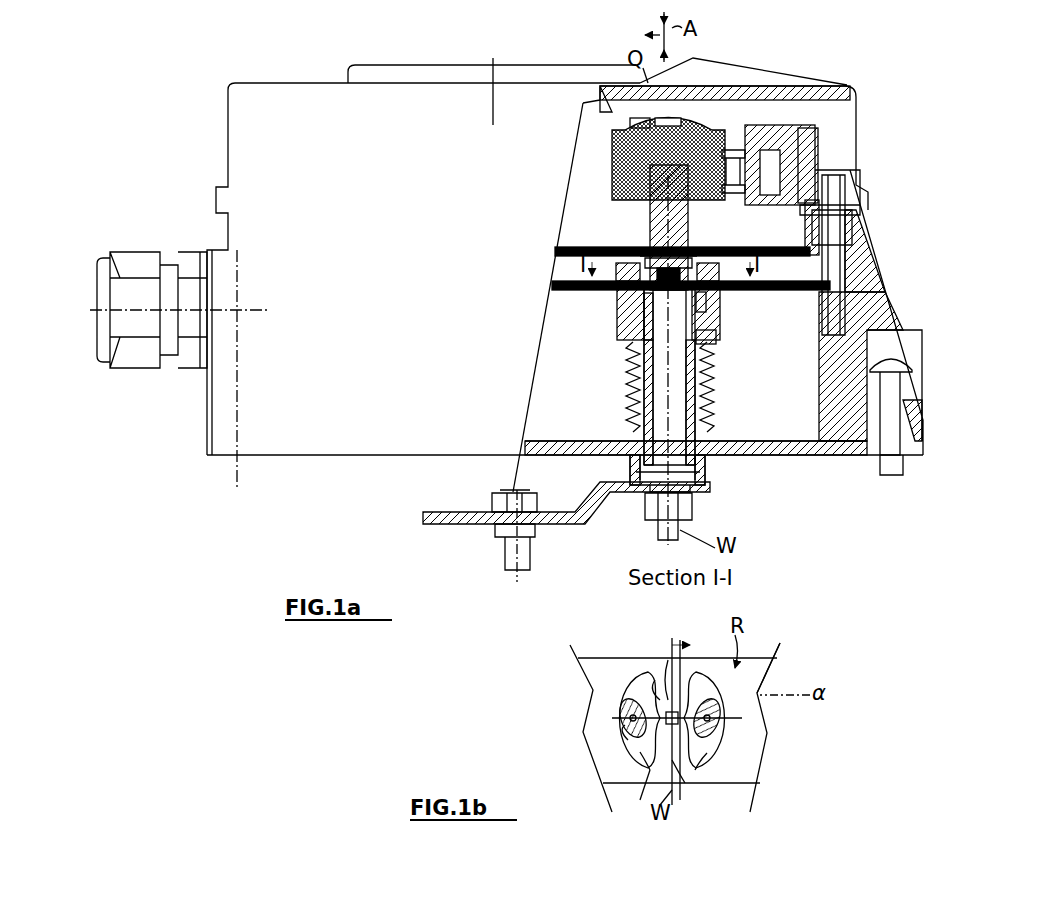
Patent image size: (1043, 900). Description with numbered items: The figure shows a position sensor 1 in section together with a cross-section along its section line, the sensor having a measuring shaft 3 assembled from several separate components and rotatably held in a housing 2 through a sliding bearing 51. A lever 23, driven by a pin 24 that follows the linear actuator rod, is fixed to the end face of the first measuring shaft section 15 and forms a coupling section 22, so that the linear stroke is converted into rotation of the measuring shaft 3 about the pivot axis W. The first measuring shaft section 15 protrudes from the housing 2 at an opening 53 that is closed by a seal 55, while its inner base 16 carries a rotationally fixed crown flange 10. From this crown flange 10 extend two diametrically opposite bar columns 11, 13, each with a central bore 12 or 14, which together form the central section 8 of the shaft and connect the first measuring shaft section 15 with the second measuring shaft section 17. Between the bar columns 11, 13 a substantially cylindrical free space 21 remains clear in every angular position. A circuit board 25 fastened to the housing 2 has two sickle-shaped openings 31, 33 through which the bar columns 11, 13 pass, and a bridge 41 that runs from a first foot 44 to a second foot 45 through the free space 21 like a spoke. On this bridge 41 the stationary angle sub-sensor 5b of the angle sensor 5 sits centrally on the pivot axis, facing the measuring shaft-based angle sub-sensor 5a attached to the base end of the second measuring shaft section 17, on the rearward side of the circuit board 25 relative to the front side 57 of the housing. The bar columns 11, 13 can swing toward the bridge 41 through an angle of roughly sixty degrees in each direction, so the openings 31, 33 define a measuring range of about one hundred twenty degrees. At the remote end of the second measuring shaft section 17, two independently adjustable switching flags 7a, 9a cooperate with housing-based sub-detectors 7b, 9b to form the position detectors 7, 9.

In FIG. 1a, the position sensor 1 is at (305, 460).
In FIG. 1a, the housing 2 is at (905, 330).
In FIG. 1a, the measuring shaft 3 is at (575, 215).
In FIG. 1b, the measuring shaft 3 is at (618, 687).
In FIG. 1a, the angle sensor 5 is at (660, 250).
In FIG. 1a, the measuring shaft-based angle sub-sensor 5a is at (676, 265).
In FIG. 1a, the stationary angle sub-sensor 5b is at (705, 300).
In FIG. 1b, the stationary angle sub-sensor 5b is at (645, 770).
In FIG. 1a, the position detector 7 is at (830, 230).
In FIG. 1a, the measuring shaft-based position sub-detector 7a is at (745, 200).
In FIG. 1a, the housing-based position sub-detector 7b is at (820, 178).
In FIG. 1a, the central section 8 is at (768, 322).
In FIG. 1a, the position detector 9 is at (765, 115).
In FIG. 1a, the measuring shaft-based position sub-detector 9a is at (740, 150).
In FIG. 1a, the housing-based position sub-detector 9b is at (785, 130).
In FIG. 1a, the crown flange 10 is at (648, 318).
In FIG. 1a, the bar column 11 is at (620, 300).
In FIG. 1b, the bar column 11 is at (623, 703).
In FIG. 1b, the bore 12 is at (625, 725).
In FIG. 1a, the bar column 13 is at (722, 300).
In FIG. 1b, the bar column 13 is at (733, 740).
In FIG. 1b, the bore 14 is at (733, 707).
In FIG. 1a, the first measuring shaft section 15 is at (690, 405).
In FIG. 1a, the base of the first measuring shaft section 16 is at (712, 340).
In FIG. 1a, the second measuring shaft section 17 is at (665, 228).
In FIG. 1b, the free space 21 is at (652, 693).
In FIG. 1a, the coupling section 22 is at (632, 500).
In FIG. 1a, the lever 23 is at (700, 500).
In FIG. 1a, the pin 24 is at (510, 553).
In FIG. 1a, the circuit board 25 is at (803, 280).
In FIG. 1b, the circuit board 25 is at (780, 670).
In FIG. 1b, the sickle-shaped opening 31 is at (640, 752).
In FIG. 1b, the sickle-shaped opening 33 is at (707, 753).
In FIG. 1a, the bridge 41 is at (620, 318).
In FIG. 1b, the bridge 41 is at (663, 690).
In FIG. 1b, the first foot 44 is at (685, 783).
In FIG. 1b, the second foot 45 is at (673, 710).
In FIG. 1a, the sliding bearing 51 is at (712, 420).
In FIG. 1a, the opening 53 is at (628, 405).
In FIG. 1a, the seal 55 is at (705, 462).
In FIG. 1a, the front side of the housing 57 is at (822, 462).